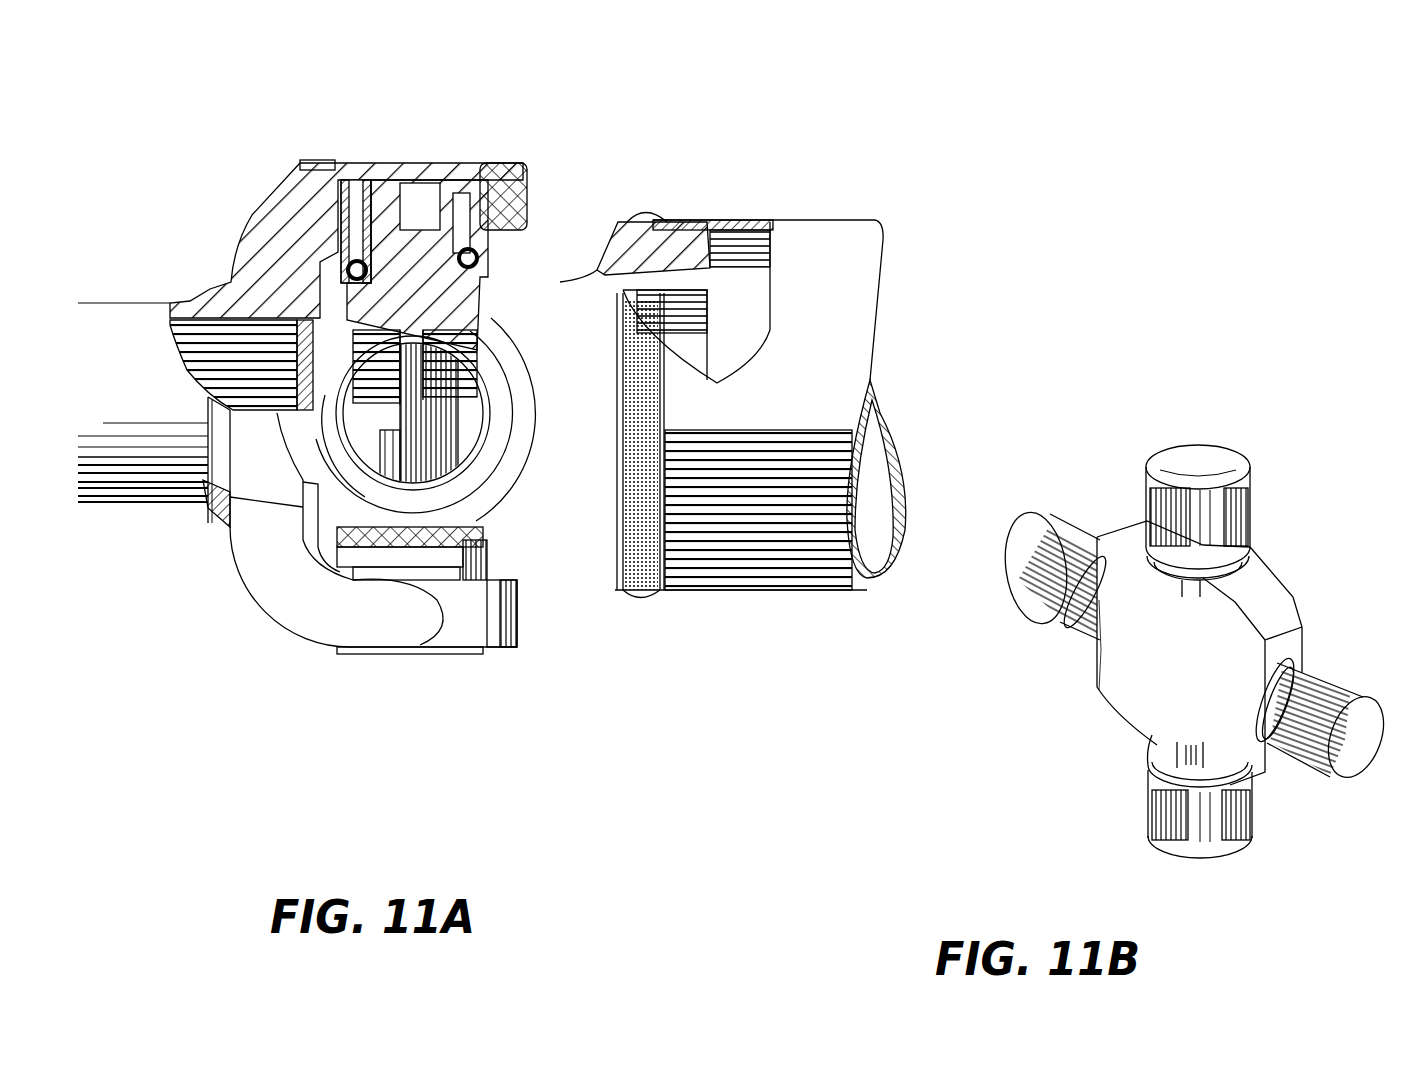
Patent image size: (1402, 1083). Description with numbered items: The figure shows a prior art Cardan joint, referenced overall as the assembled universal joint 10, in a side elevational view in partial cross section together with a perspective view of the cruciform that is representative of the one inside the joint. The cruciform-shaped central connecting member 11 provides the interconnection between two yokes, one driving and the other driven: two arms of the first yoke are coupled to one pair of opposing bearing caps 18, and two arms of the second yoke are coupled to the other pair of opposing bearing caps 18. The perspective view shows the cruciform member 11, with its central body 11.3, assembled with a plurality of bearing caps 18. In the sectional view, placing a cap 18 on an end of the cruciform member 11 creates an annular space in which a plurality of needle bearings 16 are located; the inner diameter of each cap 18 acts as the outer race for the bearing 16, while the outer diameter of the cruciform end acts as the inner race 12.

In FIG. 11A, the universal joint assembly 10 is at (242, 173).
In FIG. 11A, the cruciform-shaped central connecting member 11 is at (450, 290).
In FIG. 11B, the cruciform-shaped central connecting member 11 is at (1098, 425).
In FIG. 11B, the cross body 11.3 is at (1133, 687).
In FIG. 11A, the inner race 12 is at (364, 200).
In FIG. 11B, the inner race 12 is at (1237, 467).
In FIG. 11A, the needle bearings 16 is at (460, 207).
In FIG. 11A, the bearing caps 18 is at (433, 165).
In FIG. 11B, the bearing caps 18 is at (1052, 112).